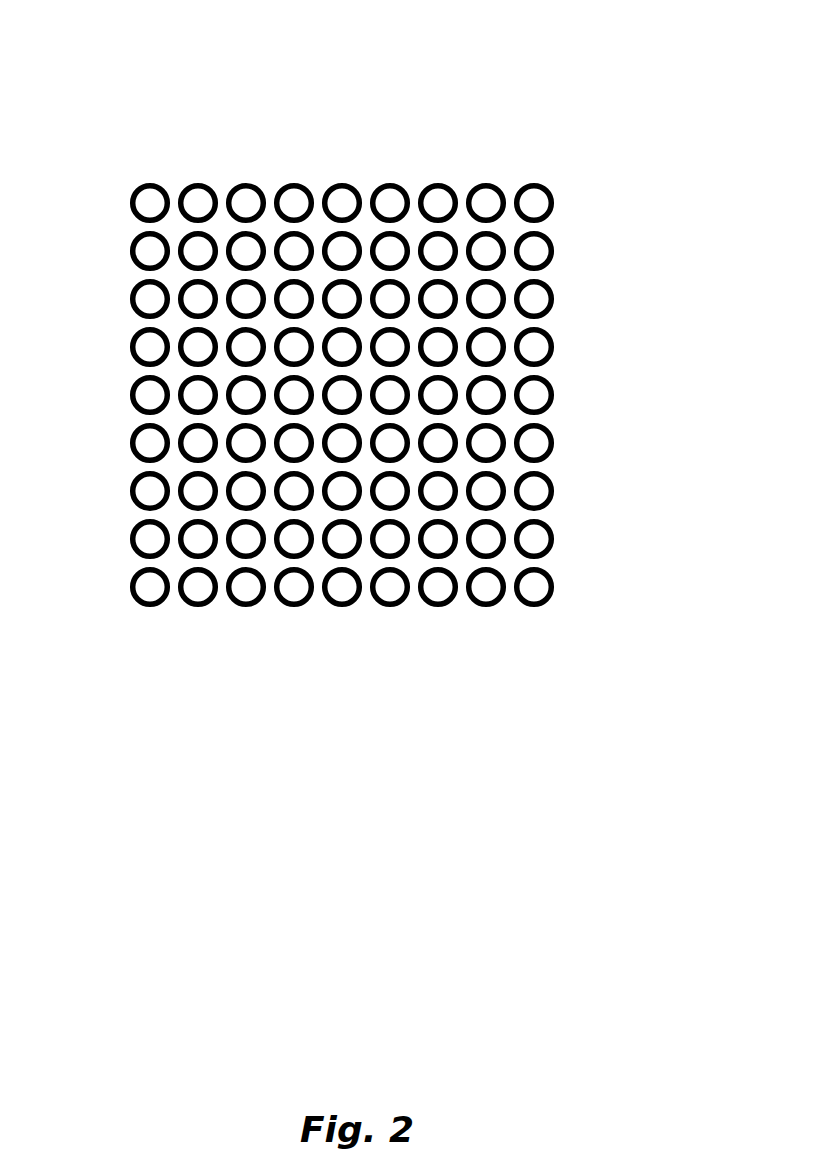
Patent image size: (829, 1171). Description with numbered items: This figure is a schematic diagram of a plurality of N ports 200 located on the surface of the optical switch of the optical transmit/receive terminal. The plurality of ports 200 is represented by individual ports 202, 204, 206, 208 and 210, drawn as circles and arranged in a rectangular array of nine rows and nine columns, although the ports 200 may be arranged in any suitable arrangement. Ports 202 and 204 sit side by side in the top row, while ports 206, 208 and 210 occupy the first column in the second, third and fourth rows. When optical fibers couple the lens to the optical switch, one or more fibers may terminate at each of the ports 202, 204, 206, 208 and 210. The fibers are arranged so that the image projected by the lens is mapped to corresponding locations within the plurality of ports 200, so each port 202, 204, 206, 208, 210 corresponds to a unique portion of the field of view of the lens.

The plurality of N ports 200 is at (600, 51).
The port 202 is at (152, 184).
The port 204 is at (192, 184).
The port 206 is at (131, 253).
The port 208 is at (131, 300).
The port 210 is at (131, 346).